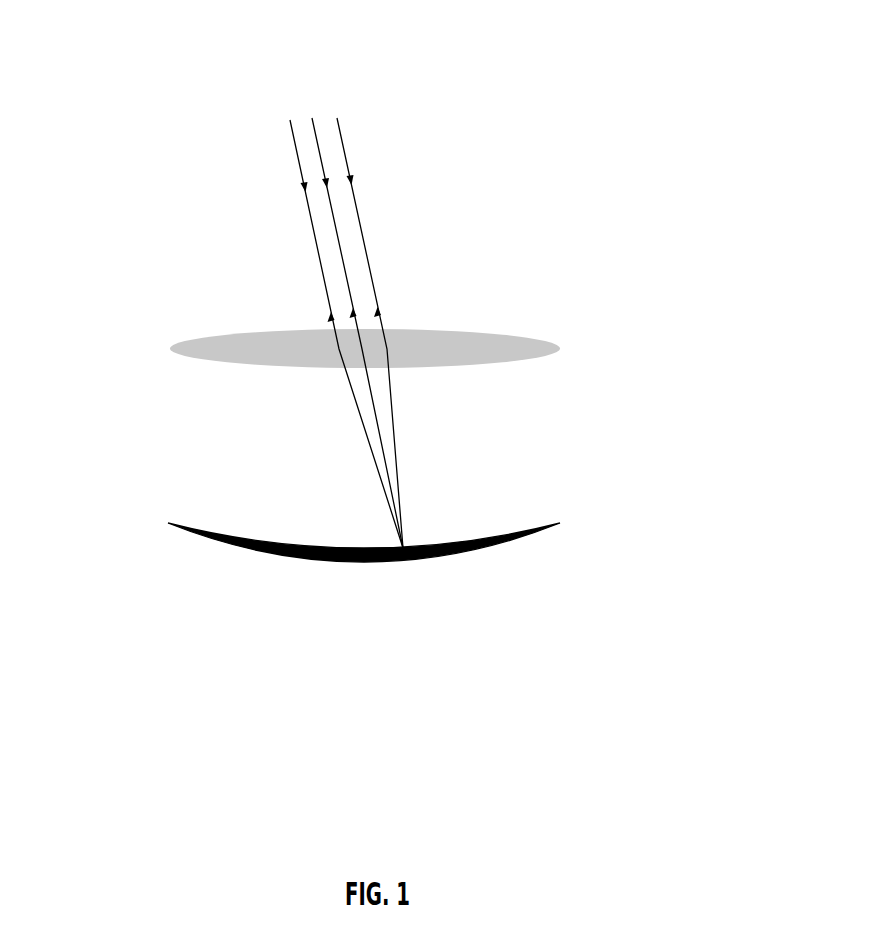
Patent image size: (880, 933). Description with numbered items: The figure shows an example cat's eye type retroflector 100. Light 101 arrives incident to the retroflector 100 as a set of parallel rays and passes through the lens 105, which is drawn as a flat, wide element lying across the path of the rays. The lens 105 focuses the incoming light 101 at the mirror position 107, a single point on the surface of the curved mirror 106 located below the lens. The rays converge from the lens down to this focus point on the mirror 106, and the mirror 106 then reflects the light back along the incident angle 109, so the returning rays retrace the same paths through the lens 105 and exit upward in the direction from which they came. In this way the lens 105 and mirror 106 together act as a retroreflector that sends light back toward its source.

The cat's eye type retroflector 100 is at (64, 34).
The light 101 is at (383, 169).
The lens 105 is at (572, 336).
The mirror 106 is at (572, 531).
The mirror position 107 is at (380, 606).
The incident angle 109 is at (397, 304).